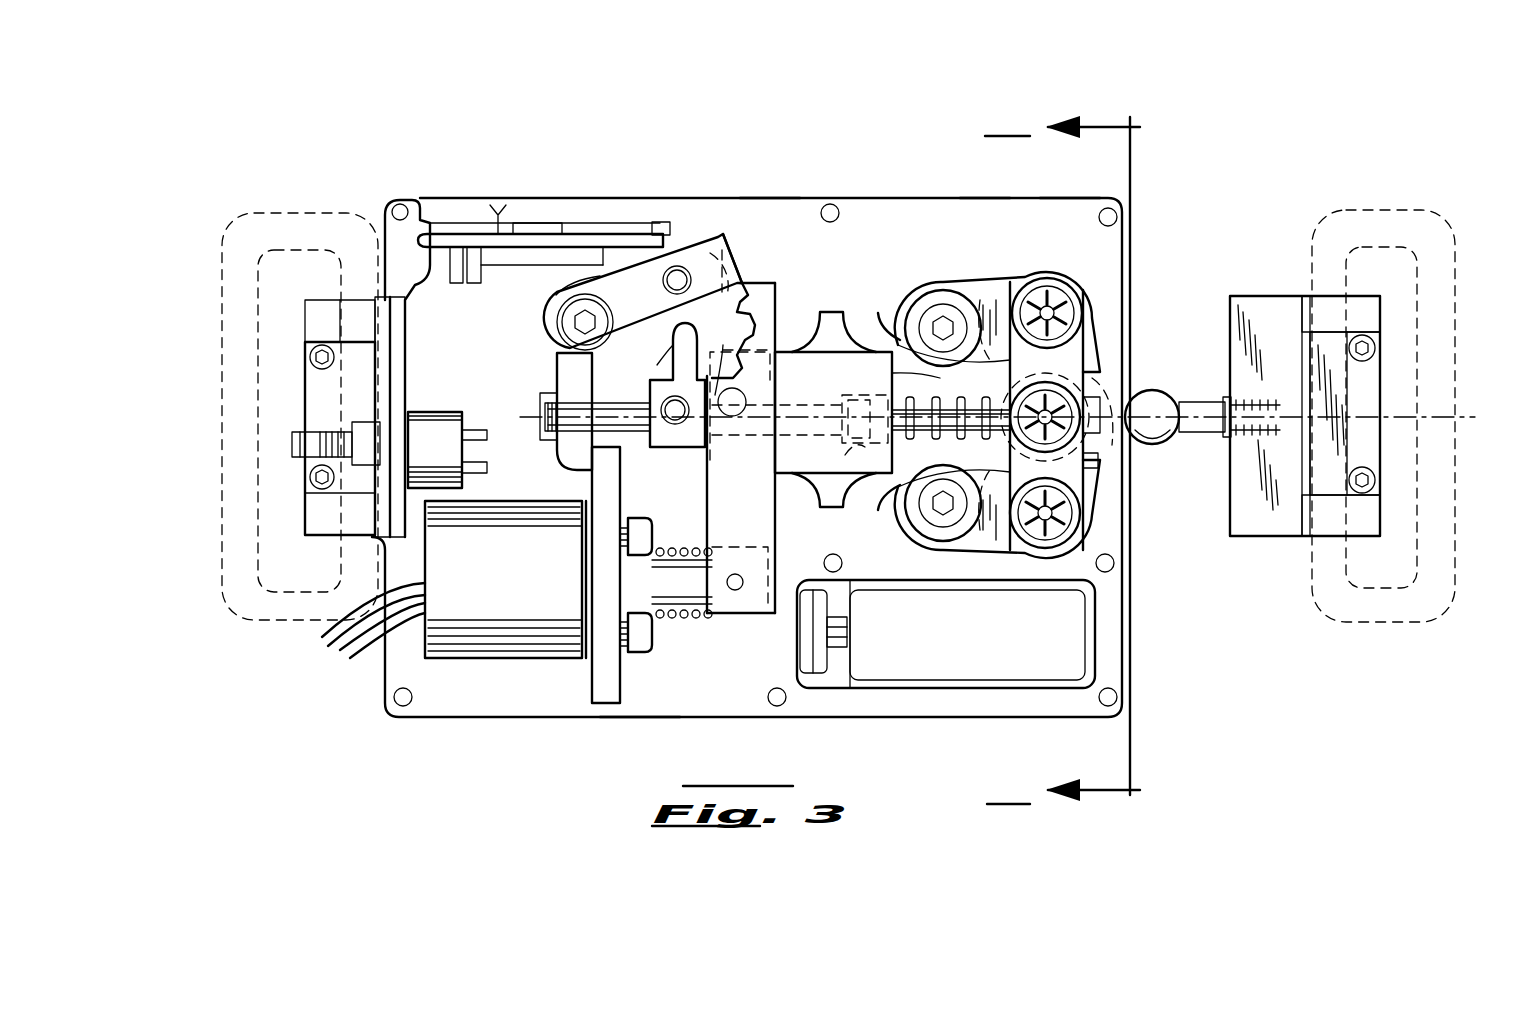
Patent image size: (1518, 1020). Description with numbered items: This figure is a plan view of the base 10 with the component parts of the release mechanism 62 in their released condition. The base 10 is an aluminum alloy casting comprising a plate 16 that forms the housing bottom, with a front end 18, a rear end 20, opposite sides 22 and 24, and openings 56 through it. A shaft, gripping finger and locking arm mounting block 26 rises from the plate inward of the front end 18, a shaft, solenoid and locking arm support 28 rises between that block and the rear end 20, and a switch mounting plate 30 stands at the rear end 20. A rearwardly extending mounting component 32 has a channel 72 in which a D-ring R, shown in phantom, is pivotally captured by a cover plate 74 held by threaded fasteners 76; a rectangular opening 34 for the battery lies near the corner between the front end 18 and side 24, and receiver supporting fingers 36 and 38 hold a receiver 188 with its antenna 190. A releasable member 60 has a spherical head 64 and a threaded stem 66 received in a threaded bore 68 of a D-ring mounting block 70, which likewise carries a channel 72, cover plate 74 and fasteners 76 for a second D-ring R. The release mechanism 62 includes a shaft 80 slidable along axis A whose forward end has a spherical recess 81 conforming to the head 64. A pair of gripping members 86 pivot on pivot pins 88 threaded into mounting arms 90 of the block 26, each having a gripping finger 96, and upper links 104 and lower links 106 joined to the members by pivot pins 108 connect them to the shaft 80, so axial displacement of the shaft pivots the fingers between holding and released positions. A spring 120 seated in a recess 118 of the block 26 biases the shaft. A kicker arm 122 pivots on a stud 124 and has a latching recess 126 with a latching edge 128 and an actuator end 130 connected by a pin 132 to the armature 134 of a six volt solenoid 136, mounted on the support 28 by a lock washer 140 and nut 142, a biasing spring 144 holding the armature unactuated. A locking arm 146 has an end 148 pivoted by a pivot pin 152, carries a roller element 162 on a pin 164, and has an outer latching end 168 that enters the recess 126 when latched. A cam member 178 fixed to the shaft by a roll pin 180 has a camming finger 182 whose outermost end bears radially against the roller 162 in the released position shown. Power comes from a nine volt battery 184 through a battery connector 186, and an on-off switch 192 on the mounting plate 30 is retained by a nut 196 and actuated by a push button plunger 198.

The base 10 is at (775, 140).
The plate 16 is at (1002, 205).
The front end 18 is at (1130, 632).
The rear end 20 is at (385, 677).
The side 22 is at (1060, 198).
The side 24 is at (640, 717).
The mounting block 26 is at (830, 296).
The support 28 is at (575, 690).
The switch mounting plate 30 is at (420, 378).
The mounting component 32 is at (325, 540).
The rectangular opening 34 is at (995, 682).
The receiver supporting finger 36 is at (412, 225).
The receiver supporting finger 38 is at (655, 222).
The mounting holes 56 is at (392, 208).
The releasable member 60 is at (1170, 395).
The release mechanism 62 is at (858, 260).
The spherical head 64 is at (1150, 440).
The threaded stem 66 is at (1203, 435).
The threaded bore 68 is at (1252, 400).
The D-ring mounting block 70 is at (1284, 555).
The channel 72 is at (1314, 300).
The cover plate 74 is at (1370, 390).
The threaded fasteners 76 is at (1376, 352).
The shaft 80 is at (550, 398).
The spherical recess 81 is at (1112, 382).
The gripping members 86 is at (983, 270).
The pivot pins 88 is at (940, 320).
The mounting arms 90 is at (870, 508).
The gripping finger 96 is at (1097, 365).
The upper links 104 is at (1090, 335).
The lower links 106 is at (1028, 285).
The pivot pin 108 is at (1068, 308).
The recess 118 is at (850, 452).
The spring 120 is at (862, 395).
The kicker arm 122 is at (806, 675).
The pivot pin or stud 124 is at (778, 372).
The latching recess 126 is at (723, 345).
The latching edge 128 is at (747, 275).
The actuator end 130 is at (748, 596).
The pin 132 is at (728, 590).
The armature 134 is at (692, 600).
The solenoid 136 is at (505, 675).
The lock washer 140 is at (618, 590).
The nut 142 is at (588, 552).
The biasing spring 144 is at (665, 610).
The locking arm 146 is at (625, 235).
The end 148 is at (560, 292).
The pivot pin 152 is at (568, 325).
The roller element 162 is at (683, 236).
The pin 164 is at (693, 275).
The outer latching end 168 is at (718, 240).
The cam member 178 is at (665, 470).
The roll pin 180 is at (660, 432).
The camming finger 182 is at (668, 343).
The battery 184 is at (935, 672).
The battery connector 186 is at (833, 675).
The receiver 188 is at (480, 233).
The antenna 190 is at (505, 198).
The on-off switch 192 is at (490, 483).
The nut 196 is at (350, 420).
The push button plunger 198 is at (292, 445).
The D-ring R is at (232, 205).
The axis A is at (1455, 417).